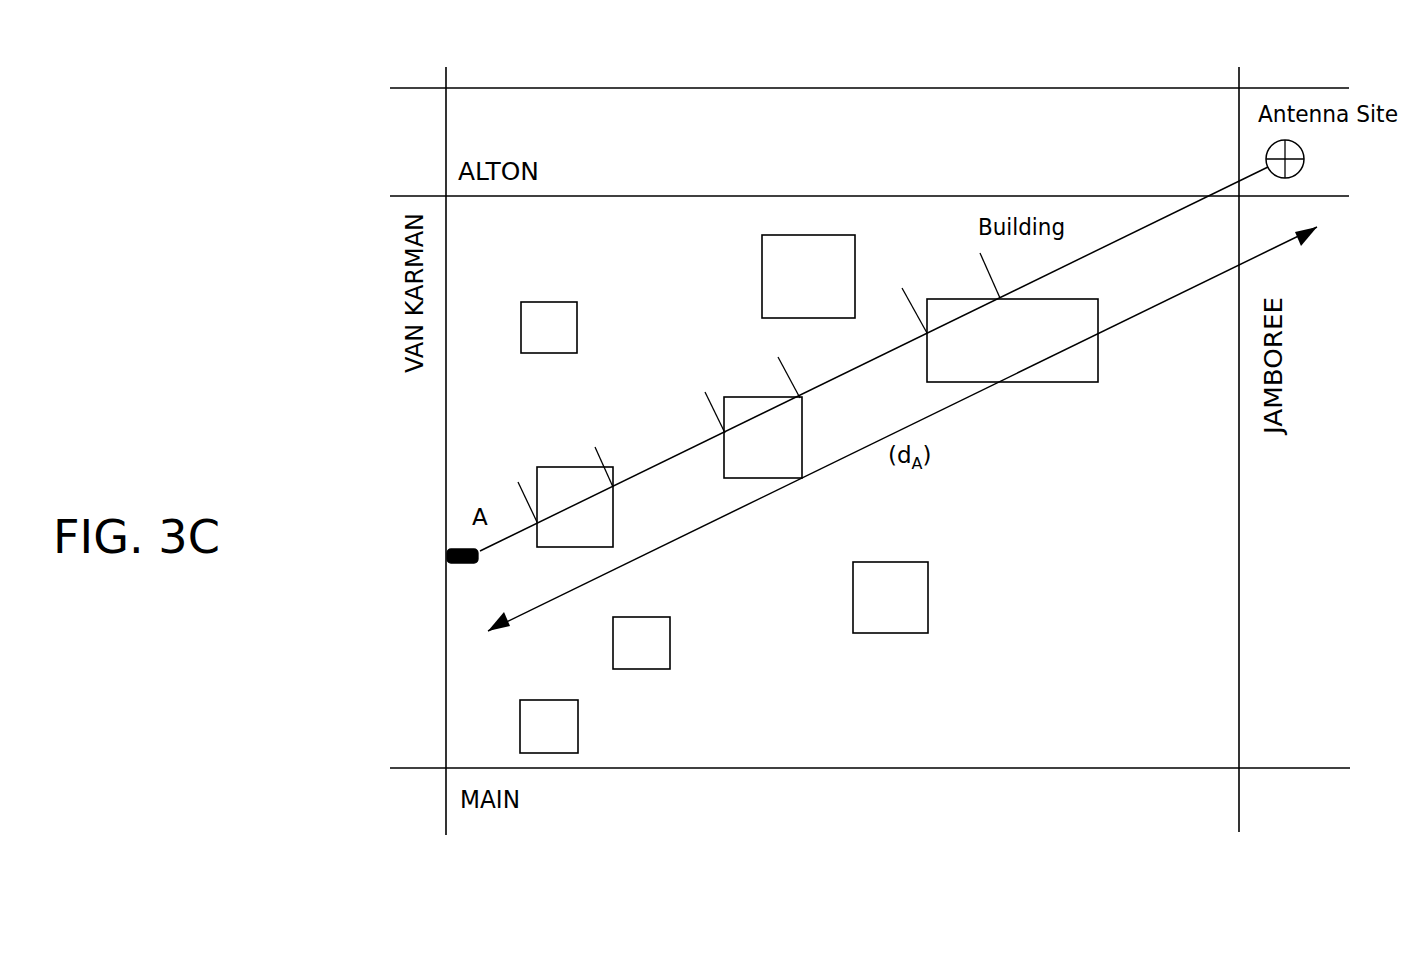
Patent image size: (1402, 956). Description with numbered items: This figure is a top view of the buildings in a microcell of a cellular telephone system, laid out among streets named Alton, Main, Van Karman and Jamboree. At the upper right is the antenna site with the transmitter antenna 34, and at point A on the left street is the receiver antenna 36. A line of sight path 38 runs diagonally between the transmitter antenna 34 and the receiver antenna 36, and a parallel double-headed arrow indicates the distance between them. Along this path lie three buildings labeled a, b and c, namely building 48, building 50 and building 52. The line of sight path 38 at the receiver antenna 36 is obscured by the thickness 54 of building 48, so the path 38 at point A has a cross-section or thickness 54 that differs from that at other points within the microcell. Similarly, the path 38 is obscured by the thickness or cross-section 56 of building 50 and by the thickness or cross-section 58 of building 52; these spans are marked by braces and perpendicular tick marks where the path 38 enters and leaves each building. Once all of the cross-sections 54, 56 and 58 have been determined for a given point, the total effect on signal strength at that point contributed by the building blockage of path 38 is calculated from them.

The transmitter antenna 34 is at (1326, 152).
The receiver antenna 36 is at (419, 543).
The line of sight path 38 is at (874, 359).
The building 48 is at (602, 547).
The building 50 is at (768, 478).
The building 52 is at (1042, 382).
The thickness 54 is at (558, 467).
The thickness or cross-section 56 is at (745, 375).
The thickness or cross-section 58 is at (948, 282).